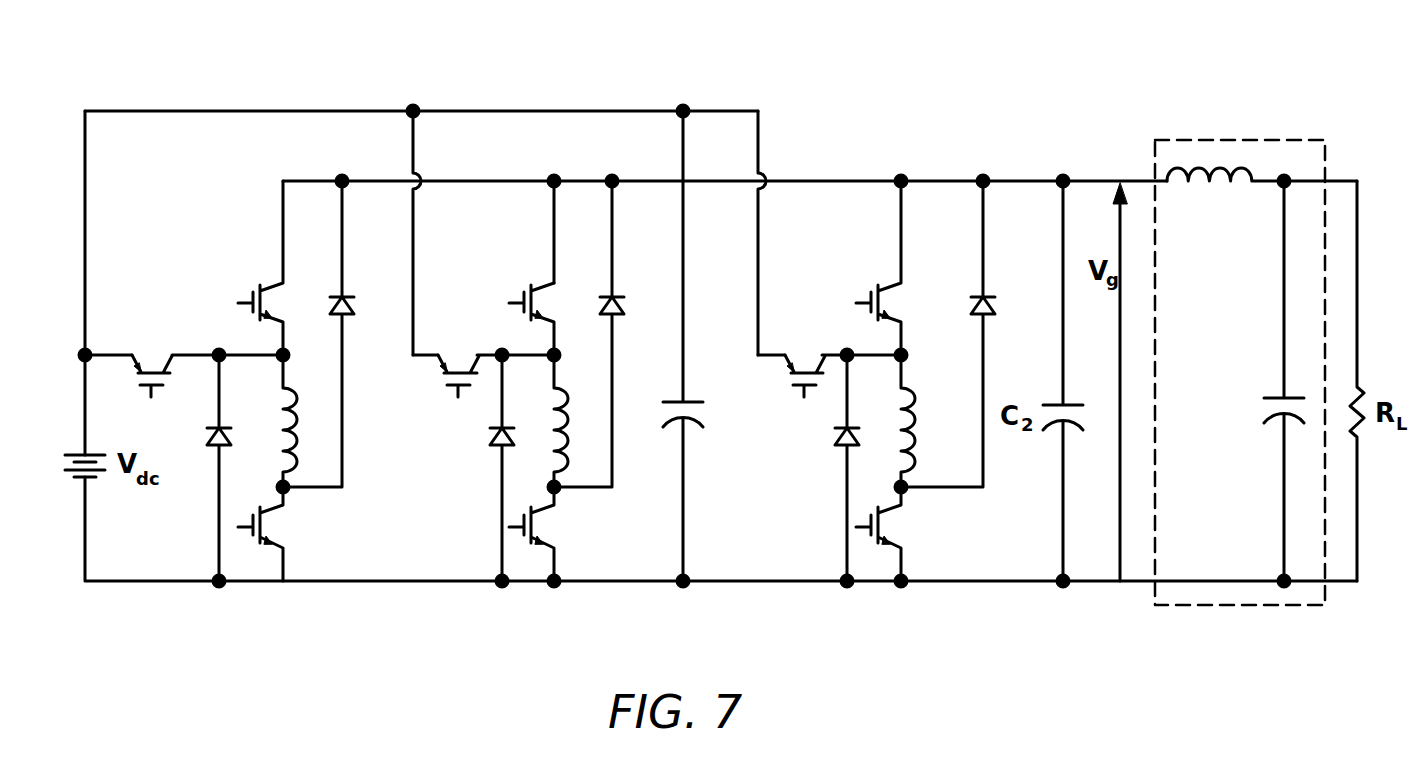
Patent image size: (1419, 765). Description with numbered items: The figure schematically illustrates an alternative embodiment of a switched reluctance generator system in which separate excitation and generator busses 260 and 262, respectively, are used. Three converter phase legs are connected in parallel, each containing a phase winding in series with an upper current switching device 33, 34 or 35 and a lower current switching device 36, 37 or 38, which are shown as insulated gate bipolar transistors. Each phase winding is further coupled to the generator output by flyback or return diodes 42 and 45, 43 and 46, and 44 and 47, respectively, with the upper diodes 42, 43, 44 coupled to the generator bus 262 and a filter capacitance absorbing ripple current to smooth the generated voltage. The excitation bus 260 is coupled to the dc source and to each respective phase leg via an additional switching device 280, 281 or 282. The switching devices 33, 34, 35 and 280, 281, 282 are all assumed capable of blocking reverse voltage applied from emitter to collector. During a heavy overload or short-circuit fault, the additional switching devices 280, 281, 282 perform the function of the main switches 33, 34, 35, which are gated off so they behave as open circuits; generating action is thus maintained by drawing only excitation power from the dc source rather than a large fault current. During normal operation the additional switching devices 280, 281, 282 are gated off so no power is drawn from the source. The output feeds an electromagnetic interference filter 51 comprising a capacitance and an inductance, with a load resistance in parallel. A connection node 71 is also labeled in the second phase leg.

The generator bus 262 is at (508, 111).
The excitation bus 260 is at (918, 181).
The electromagnetic interference filter 51 is at (1265, 140).
The upper current switching device 33 is at (276, 283).
The upper current switching device 34 is at (547, 283).
The upper current switching device 35 is at (893, 283).
The lower current switching device 36 is at (278, 517).
The lower current switching device 37 is at (551, 517).
The lower current switching device 38 is at (898, 517).
The flyback diode 42 is at (350, 316).
The flyback diode 43 is at (618, 306).
The flyback diode 44 is at (990, 316).
The flyback diode 45 is at (212, 441).
The flyback diode 46 is at (495, 441).
The flyback diode 47 is at (840, 441).
The node / connection wire 71 is at (556, 225).
The additional switching device 280 is at (126, 371).
The additional switching device 281 is at (433, 371).
The additional switching device 282 is at (780, 371).